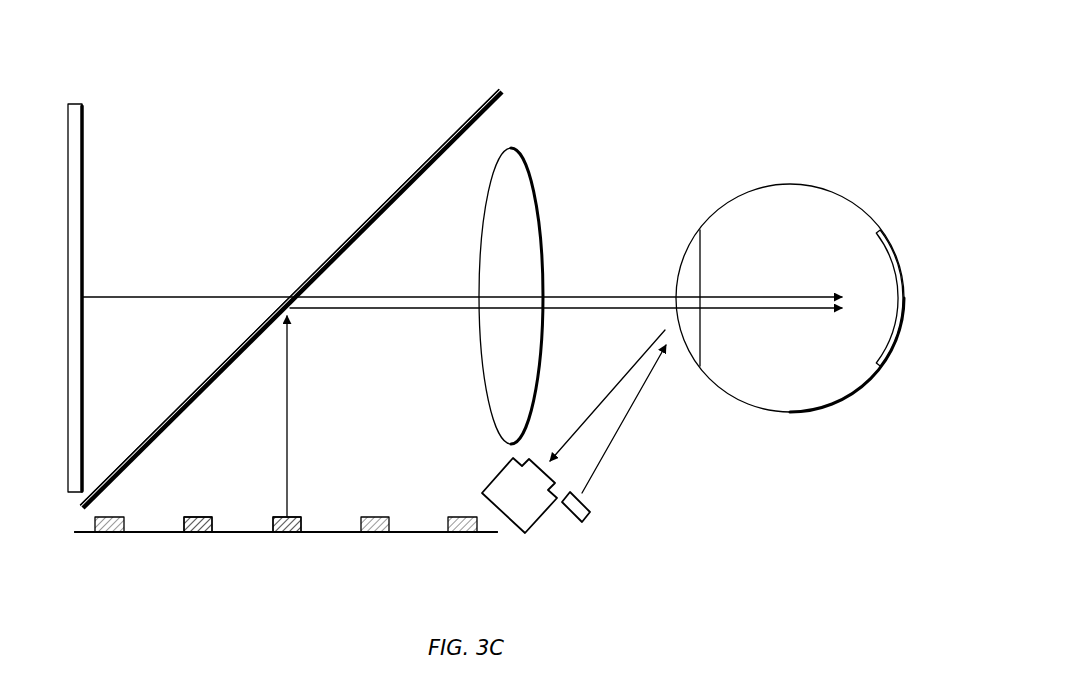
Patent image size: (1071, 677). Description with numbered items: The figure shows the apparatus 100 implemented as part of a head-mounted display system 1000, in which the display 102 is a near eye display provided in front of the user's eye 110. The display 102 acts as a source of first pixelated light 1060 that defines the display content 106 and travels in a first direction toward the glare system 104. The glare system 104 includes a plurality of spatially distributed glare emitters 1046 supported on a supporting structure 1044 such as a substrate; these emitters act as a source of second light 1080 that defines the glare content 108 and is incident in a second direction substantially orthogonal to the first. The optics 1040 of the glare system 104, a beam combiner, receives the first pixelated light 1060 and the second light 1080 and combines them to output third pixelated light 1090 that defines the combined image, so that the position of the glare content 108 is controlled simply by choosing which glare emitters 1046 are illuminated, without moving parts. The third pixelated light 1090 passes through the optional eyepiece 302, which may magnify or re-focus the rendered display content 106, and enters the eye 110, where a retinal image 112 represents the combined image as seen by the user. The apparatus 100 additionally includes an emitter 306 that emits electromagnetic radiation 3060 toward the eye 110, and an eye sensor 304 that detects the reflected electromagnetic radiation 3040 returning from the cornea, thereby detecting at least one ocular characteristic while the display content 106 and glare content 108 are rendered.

The apparatus 100 is at (259, 88).
The head-mounted display system 1000 is at (704, 75).
The display 102 is at (74, 103).
The display content 106 is at (83, 130).
The glare system 104 is at (259, 258).
The optics 1040 is at (465, 124).
The first pixelated light 1060 is at (150, 299).
The third pixelated light 1090 is at (409, 304).
The second light 1080 is at (289, 380).
The glare content 108 is at (289, 515).
The supporting structure 1044 is at (416, 530).
The glare emitters 1046 is at (196, 527).
The eyepiece 302 is at (525, 162).
The eye 110 is at (788, 185).
The retinal image 112 is at (891, 243).
The eye sensor 304 is at (537, 524).
The emitter 306 is at (590, 515).
The reflected electromagnetic radiation 3040 is at (612, 389).
The electromagnetic radiation 3060 is at (632, 405).